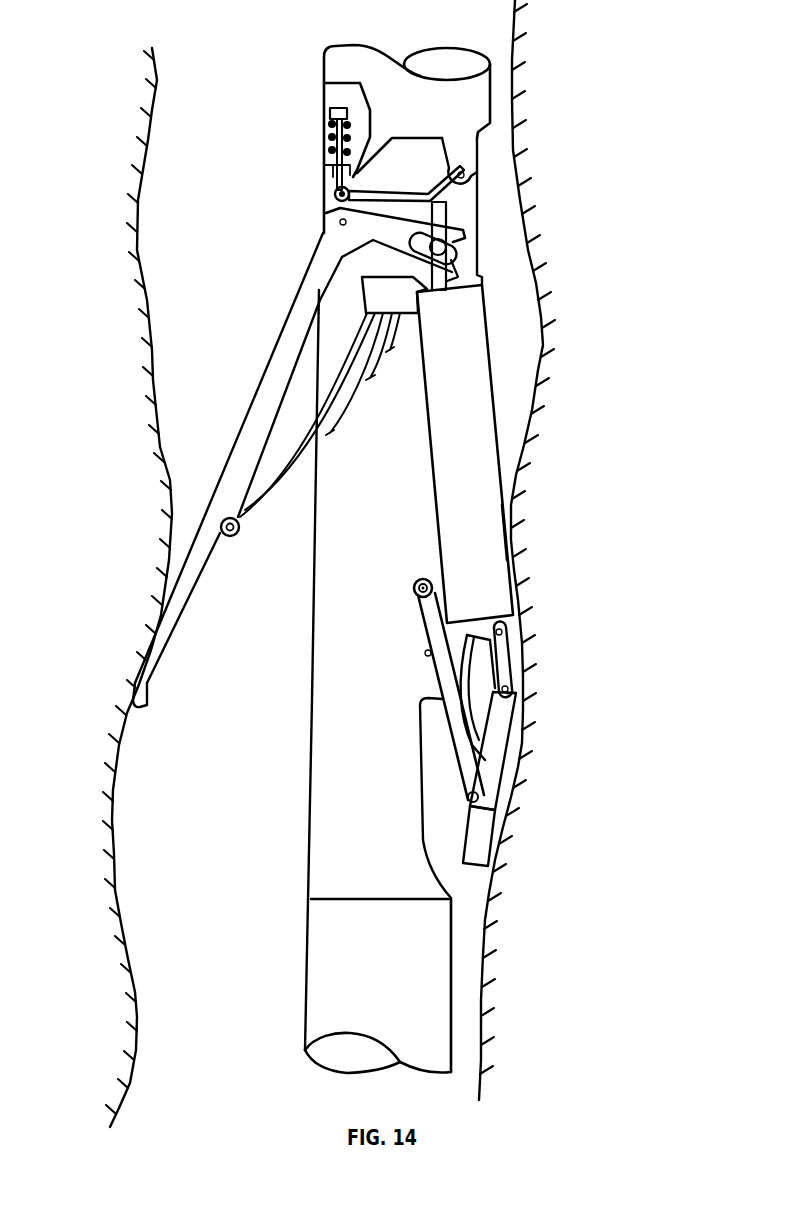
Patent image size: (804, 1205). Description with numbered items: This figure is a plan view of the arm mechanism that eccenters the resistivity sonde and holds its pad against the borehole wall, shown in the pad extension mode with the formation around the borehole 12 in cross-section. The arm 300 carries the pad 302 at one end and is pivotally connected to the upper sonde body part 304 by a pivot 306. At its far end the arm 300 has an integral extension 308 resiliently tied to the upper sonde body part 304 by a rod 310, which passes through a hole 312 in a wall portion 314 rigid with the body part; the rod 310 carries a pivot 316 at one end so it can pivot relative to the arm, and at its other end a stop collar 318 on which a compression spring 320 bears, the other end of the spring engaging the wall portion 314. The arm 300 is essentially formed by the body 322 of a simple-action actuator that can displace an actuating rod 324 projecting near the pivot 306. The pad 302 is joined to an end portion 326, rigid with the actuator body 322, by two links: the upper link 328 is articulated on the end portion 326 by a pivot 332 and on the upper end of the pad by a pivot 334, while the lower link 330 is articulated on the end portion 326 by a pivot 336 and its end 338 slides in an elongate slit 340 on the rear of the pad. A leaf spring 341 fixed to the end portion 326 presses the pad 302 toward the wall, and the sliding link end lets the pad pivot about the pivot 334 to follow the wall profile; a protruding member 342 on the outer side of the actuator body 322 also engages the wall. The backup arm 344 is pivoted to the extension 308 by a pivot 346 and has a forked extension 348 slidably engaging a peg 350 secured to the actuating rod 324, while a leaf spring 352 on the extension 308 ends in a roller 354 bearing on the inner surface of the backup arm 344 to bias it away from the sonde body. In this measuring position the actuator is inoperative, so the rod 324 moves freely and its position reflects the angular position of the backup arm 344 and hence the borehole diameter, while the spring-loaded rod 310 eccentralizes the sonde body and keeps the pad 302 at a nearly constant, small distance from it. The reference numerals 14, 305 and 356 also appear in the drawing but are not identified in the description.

The borehole 12 is at (290, 29).
The borehole wall 14 is at (117, 125).
The arm 300 is at (484, 279).
The pad 302 is at (500, 737).
The upper sonde body part 304 is at (490, 103).
The lower pipe section 305 is at (451, 998).
The pivot 306 is at (470, 171).
The integral extension 308 is at (479, 224).
The rod 310 is at (324, 147).
The hole 312 is at (336, 191).
The wall portion 314 is at (324, 165).
The pivot 316 is at (326, 205).
The stop collar 318 is at (329, 113).
The compression spring 320 is at (328, 137).
The actuator body 322 is at (490, 373).
The actuating rod 324 is at (448, 262).
The end portion 326 is at (505, 630).
The upper link 328 is at (512, 664).
The lower link 330 is at (478, 746).
The pivot 332 is at (513, 638).
The pivot 334 is at (516, 692).
The pivot 336 is at (424, 654).
The end 338 is at (496, 802).
The elongate slit 340 is at (497, 770).
The leaf spring 341 is at (466, 642).
The protruding member 342 is at (506, 541).
The backup arm 344 is at (230, 458).
The pivot 346 is at (340, 223).
The forked extension 348 is at (362, 273).
The peg 350 is at (452, 243).
The leaf spring 352 is at (322, 412).
The roller 354 is at (236, 535).
The pivot 356 is at (417, 594).